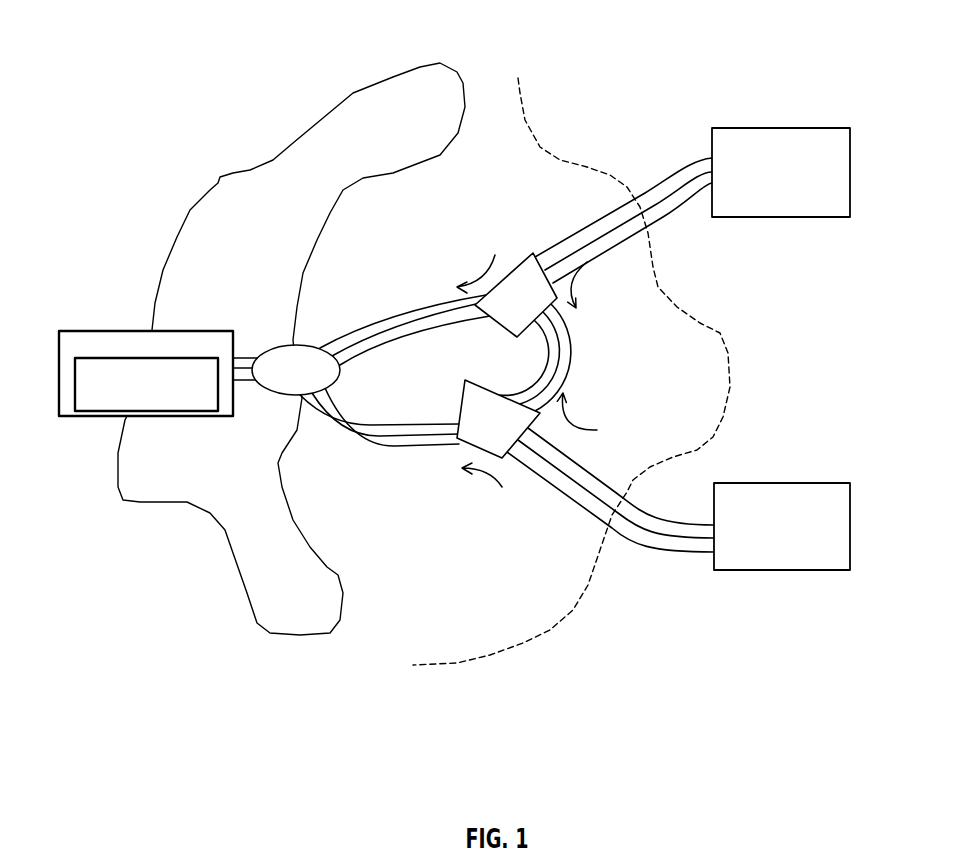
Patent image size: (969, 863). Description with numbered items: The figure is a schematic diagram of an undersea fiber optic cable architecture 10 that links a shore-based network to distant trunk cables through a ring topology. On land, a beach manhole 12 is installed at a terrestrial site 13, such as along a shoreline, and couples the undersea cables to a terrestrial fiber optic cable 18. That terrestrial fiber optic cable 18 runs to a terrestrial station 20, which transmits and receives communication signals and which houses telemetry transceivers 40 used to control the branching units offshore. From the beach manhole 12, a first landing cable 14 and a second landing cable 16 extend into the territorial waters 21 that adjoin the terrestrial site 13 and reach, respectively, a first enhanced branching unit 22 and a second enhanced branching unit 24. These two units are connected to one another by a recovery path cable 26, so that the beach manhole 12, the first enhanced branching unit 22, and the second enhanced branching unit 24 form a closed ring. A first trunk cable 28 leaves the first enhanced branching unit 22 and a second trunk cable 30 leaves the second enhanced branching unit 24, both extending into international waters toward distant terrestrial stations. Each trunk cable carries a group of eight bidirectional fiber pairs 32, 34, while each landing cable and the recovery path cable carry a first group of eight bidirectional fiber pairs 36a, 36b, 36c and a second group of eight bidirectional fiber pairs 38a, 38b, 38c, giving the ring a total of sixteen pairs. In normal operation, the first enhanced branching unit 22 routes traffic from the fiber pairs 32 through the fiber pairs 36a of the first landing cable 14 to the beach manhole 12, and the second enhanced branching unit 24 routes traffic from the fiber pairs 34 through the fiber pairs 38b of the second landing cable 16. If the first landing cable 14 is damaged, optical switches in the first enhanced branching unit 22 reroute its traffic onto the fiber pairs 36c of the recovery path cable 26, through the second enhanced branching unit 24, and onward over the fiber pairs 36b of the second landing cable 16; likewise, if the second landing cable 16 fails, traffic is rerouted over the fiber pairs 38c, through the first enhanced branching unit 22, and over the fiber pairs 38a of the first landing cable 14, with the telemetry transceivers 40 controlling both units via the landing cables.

The undersea fiber optic cable architecture 10 is at (758, 38).
The beach manhole 12 is at (283, 345).
The terrestrial site 13 is at (231, 444).
The first landing cable 14 is at (404, 307).
The second landing cable 16 is at (373, 450).
The terrestrial fiber optic cable 18 is at (246, 356).
The terrestrial station 20 is at (123, 350).
The territorial waters 21 is at (528, 575).
The first enhanced branching unit 22 is at (532, 253).
The second enhanced branching unit 24 is at (503, 462).
The recovery path cable 26 is at (577, 357).
The first trunk cable 28 is at (701, 160).
The second trunk cable 30 is at (681, 553).
The bidirectional fiber pairs of the first trunk cable 32 is at (672, 182).
The bidirectional fiber pairs of the second trunk cable 34 is at (644, 549).
The first group of bidirectional fiber pairs in the first landing cable 36a is at (393, 320).
The first group of bidirectional fiber pairs in the second landing cable 36b is at (338, 426).
The first group of bidirectional fiber pairs in the recovery path cable 36c is at (561, 371).
The second group of bidirectional fiber pairs in the first landing cable 38a is at (445, 319).
The second group of bidirectional fiber pairs in the second landing cable 38b is at (357, 440).
The second group of bidirectional fiber pairs in the recovery path cable 38c is at (557, 339).
The telemetry transceivers 40 is at (75, 380).